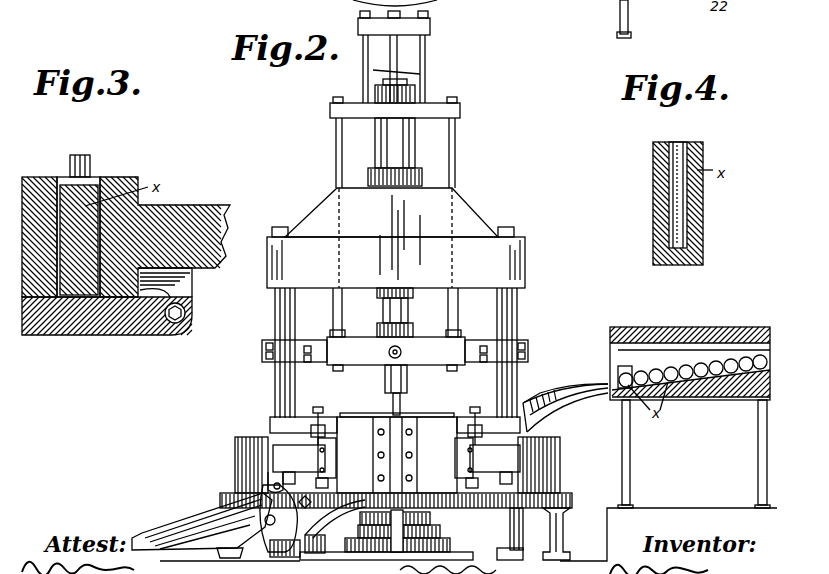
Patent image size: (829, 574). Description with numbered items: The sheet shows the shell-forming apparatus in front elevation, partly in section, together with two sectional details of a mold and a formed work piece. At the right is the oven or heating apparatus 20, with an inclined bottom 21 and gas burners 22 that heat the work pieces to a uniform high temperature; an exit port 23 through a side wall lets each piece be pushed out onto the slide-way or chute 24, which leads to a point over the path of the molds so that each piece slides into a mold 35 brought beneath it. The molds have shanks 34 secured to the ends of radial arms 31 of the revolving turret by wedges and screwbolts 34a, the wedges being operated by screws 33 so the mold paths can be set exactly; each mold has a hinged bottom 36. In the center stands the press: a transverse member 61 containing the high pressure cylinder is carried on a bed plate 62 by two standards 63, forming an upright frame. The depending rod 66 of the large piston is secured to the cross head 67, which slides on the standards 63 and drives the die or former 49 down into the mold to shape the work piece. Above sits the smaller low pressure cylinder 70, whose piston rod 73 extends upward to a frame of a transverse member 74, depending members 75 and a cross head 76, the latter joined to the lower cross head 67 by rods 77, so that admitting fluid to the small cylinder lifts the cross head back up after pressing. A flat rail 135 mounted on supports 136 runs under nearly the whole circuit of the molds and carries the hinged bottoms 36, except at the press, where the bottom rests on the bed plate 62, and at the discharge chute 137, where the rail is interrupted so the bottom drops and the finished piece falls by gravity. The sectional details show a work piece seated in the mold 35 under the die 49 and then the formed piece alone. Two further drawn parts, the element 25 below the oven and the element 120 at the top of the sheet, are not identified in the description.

In FIG. 2, the oven or heating apparatus 20 is at (757, 326).
In FIG. 2, the inclined bottom 21 is at (700, 376).
In FIG. 2, the gas burners 22 is at (714, 354).
In FIG. 2, the exit port 23 is at (622, 370).
In FIG. 2, the slide-way or chute 24 is at (580, 405).
In FIG. 2, the legs 25 is at (630, 462).
In FIG. 2, the radial arms 31 is at (395, 453).
In FIG. 2, the screws 33 is at (318, 400).
In FIG. 2, the shanks of molds 34 is at (394, 465).
In FIG. 3, the shanks of molds 34 is at (187, 210).
In FIG. 2, the screwbolts 34a is at (324, 470).
In FIG. 2, the mold 35 is at (560, 460).
In FIG. 3, the mold 35 is at (34, 177).
In FIG. 2, the hinged bottom 36 is at (563, 486).
In FIG. 3, the hinged bottom 36 is at (68, 335).
In FIG. 2, the die or former 49 is at (392, 403).
In FIG. 3, the die or former 49 is at (91, 160).
In FIG. 2, the member 61 is at (442, 224).
In FIG. 2, the bed plate 62 is at (332, 545).
In FIG. 2, the standards 63 is at (275, 310).
In FIG. 2, the depending rod 66 is at (413, 311).
In FIG. 2, the cross head 67 is at (395, 354).
In FIG. 2, the low pressure cylinder 70 is at (415, 138).
In FIG. 2, the upwardly extending rod 73 is at (400, 54).
In FIG. 2, the transverse member 74 is at (432, 27).
In FIG. 2, the depending members 75 is at (417, 80).
In FIG. 2, the cross head 76 is at (395, 108).
In FIG. 2, the rods 77 is at (342, 138).
In FIG. 4, the rod 120 is at (620, 6).
In FIG. 2, the flat rail 135 is at (438, 500).
In FIG. 2, the supports 136 is at (563, 531).
In FIG. 2, the discharge chute 137 is at (193, 533).